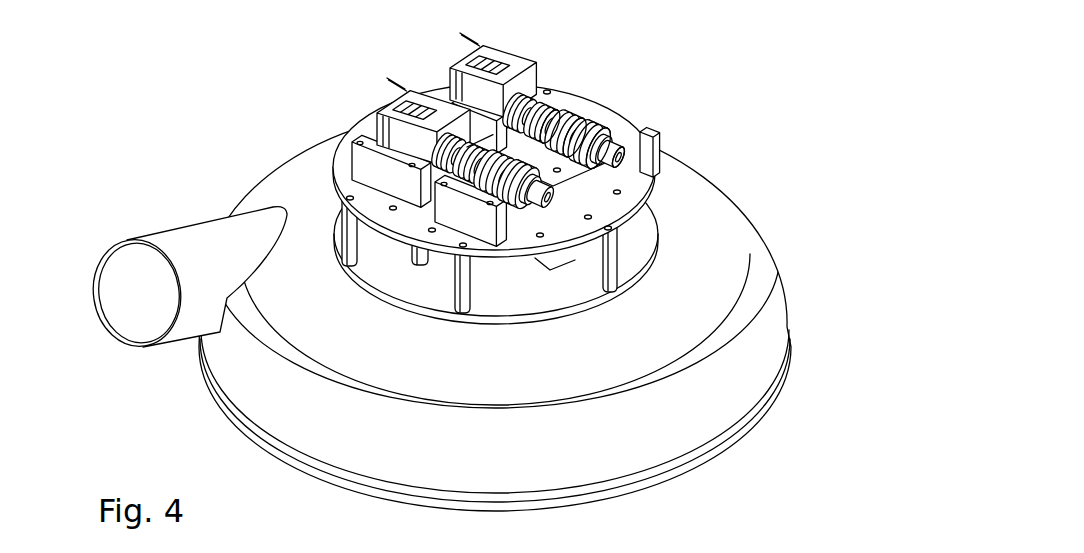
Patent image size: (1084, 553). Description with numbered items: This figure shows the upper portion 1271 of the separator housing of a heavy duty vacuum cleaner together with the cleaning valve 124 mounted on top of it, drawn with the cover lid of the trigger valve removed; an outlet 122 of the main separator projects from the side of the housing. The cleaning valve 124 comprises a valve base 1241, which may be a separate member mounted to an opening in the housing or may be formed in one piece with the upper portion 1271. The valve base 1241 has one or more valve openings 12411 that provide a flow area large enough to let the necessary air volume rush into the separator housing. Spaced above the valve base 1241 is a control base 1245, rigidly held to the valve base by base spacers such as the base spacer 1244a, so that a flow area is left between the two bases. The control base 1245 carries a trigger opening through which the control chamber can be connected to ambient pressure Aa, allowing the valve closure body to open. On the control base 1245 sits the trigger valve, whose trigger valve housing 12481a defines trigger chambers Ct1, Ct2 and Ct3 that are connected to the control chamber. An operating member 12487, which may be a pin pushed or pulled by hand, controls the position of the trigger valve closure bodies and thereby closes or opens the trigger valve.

The cleaning valve 124 is at (296, 118).
The outlet 122 is at (118, 287).
The valve base 1241 is at (660, 310).
The upper portion of the separator housing 1271 is at (693, 427).
The valve opening 12411 is at (438, 262).
The control base 1245 is at (637, 192).
The base spacer 1244a is at (613, 253).
The trigger valve housing 12481a is at (634, 165).
The operating member 12487 is at (620, 153).
The trigger chamber Ct1 is at (530, 130).
The trigger chamber Ct2 is at (607, 141).
The trigger chamber Ct3 is at (583, 140).
The ambient pressure Aa is at (545, 150).